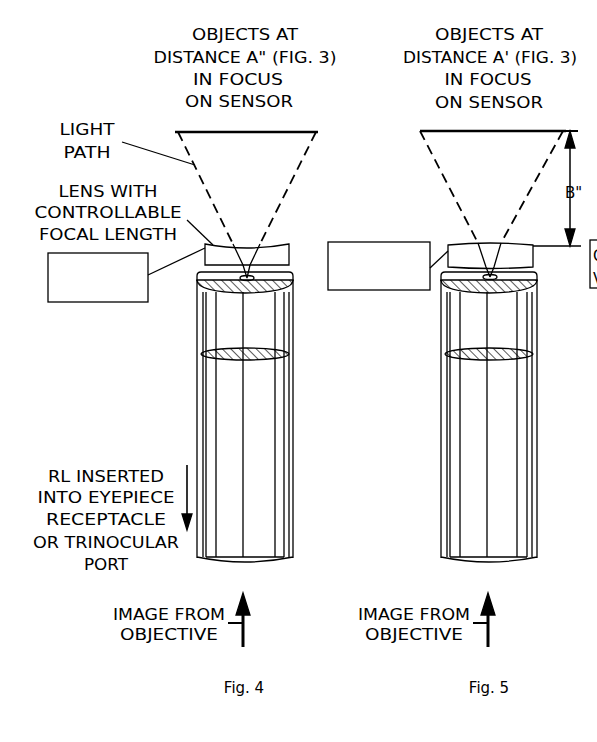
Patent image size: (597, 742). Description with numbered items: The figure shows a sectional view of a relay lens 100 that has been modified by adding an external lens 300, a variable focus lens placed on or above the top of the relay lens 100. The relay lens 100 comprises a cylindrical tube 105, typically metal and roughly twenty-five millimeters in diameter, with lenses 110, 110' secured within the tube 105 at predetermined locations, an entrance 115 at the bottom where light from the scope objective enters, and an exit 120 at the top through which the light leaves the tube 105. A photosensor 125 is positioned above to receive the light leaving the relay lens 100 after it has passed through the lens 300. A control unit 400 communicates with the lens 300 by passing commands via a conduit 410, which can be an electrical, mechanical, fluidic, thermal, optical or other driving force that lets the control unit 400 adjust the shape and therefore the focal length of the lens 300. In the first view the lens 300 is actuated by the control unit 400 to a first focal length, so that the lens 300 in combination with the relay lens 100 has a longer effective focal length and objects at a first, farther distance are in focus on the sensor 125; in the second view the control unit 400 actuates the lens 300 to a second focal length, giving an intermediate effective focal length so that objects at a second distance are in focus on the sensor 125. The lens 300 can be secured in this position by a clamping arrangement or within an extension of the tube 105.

In FIG. 4, the relay lens 100 is at (146, 410).
In FIG. 5, the relay lens 100 is at (415, 409).
In FIG. 4, the cylindrical tube 105 is at (294, 522).
In FIG. 5, the cylindrical tube 105 is at (538, 522).
In FIG. 4, the lens 110 is at (269, 297).
In FIG. 5, the lens 110 is at (513, 297).
In FIG. 4, the lens 110' is at (273, 348).
In FIG. 5, the lens 110' is at (517, 349).
In FIG. 4, the entrance 115 is at (274, 569).
In FIG. 4, the exit 120 is at (203, 290).
In FIG. 5, the exit 120 is at (447, 290).
In FIG. 4, the photosensor 125 is at (302, 133).
In FIG. 5, the photosensor 125 is at (458, 131).
In FIG. 4, the external lens 300 is at (278, 243).
In FIG. 5, the external lens 300 is at (490, 243).
In FIG. 4, the control unit 400 is at (97, 302).
In FIG. 5, the control unit 400 is at (372, 290).
In FIG. 4, the conduit 410 is at (168, 267).
In FIG. 5, the conduit 410 is at (448, 257).